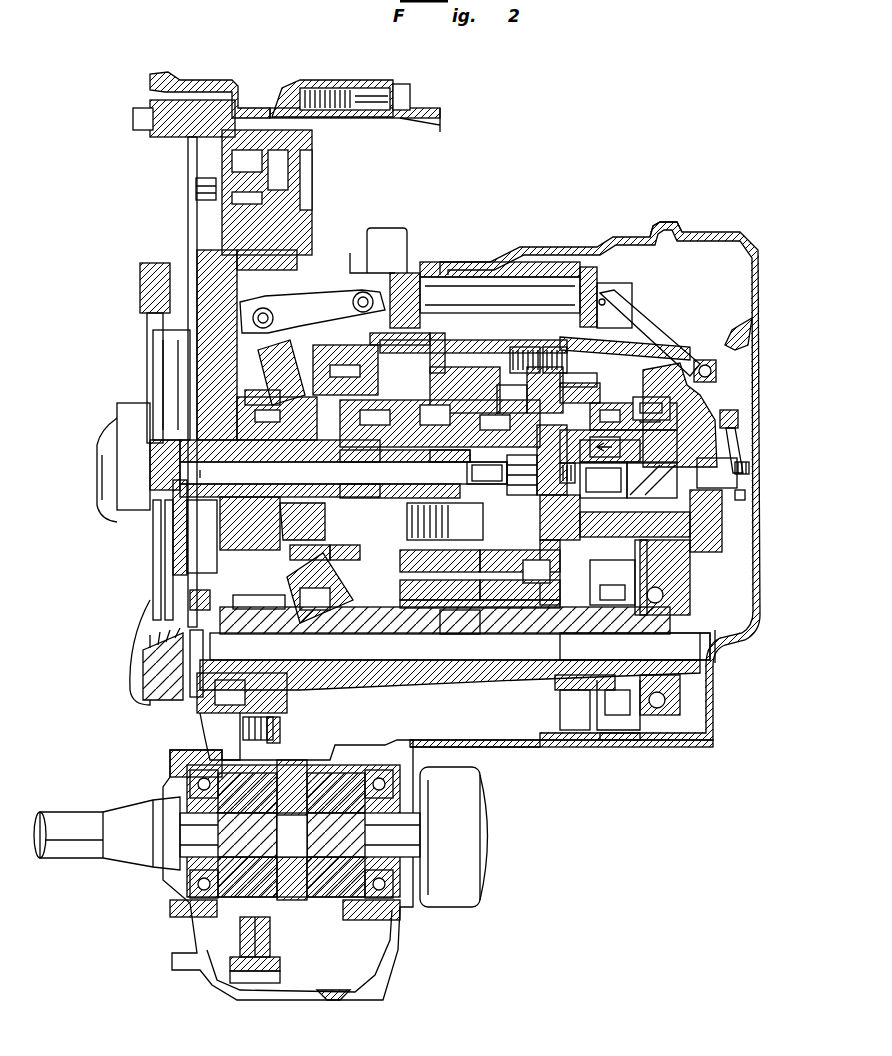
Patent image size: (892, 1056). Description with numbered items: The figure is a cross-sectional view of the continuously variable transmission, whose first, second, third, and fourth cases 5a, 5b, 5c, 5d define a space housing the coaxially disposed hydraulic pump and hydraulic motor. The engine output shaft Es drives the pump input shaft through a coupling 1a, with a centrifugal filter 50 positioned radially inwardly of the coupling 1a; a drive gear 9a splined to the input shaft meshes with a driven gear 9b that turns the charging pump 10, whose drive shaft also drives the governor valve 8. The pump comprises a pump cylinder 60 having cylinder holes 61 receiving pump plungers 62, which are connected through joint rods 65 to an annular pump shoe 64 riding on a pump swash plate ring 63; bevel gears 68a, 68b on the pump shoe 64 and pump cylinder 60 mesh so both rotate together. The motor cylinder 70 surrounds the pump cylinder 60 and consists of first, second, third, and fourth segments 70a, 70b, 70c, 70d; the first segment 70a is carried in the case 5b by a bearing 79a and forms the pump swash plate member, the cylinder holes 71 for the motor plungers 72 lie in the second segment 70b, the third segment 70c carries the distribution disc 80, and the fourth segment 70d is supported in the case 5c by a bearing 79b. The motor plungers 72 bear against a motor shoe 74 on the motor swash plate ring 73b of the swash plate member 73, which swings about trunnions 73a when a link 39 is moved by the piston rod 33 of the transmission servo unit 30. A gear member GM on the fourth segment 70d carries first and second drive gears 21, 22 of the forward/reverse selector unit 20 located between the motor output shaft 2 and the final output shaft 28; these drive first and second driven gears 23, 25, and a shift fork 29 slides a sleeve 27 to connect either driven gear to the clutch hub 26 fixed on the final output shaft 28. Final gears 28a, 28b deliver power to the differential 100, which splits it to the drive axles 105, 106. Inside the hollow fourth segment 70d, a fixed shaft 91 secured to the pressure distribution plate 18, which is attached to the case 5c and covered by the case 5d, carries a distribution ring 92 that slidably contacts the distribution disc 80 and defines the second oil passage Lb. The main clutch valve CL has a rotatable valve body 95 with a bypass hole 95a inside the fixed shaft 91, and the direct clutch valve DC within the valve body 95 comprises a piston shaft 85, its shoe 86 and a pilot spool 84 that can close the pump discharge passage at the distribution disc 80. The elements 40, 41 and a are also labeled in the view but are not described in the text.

The coupling 1a is at (140, 285).
The output shaft 2 is at (676, 420).
The first case 5a is at (188, 160).
The second case 5b is at (288, 84).
The third case 5c is at (560, 246).
The fourth case 5d is at (732, 238).
The governor valve 8 is at (375, 228).
The drive gear 9a is at (160, 568).
The driven gear 9b is at (205, 178).
The charging pump 10 is at (222, 224).
The pressure distribution plate 18 is at (722, 530).
The forward/reverse selector unit 20 is at (618, 748).
The first drive gear 21 is at (578, 369).
The second drive gear 22 is at (640, 397).
The first driven gear 23 is at (560, 722).
The second driven gear 25 is at (632, 735).
The clutch hub 26 is at (612, 628).
The sleeve 27 is at (618, 705).
The final output shaft 28 is at (520, 676).
The final gear 28a is at (245, 606).
The final gear 28b is at (255, 983).
The shift fork 29 is at (590, 735).
The transmission servo unit 30 is at (500, 277).
The piston rod 33 is at (412, 273).
The link 39 is at (318, 305).
The control unit 40 is at (731, 312).
The control lever 41 is at (672, 302).
The centrifugal filter 50 is at (146, 361).
The pump cylinder 60 is at (487, 473).
The cylinder holes 61 is at (445, 521).
The pump plungers 62 is at (450, 466).
The pump swash plate ring 63 is at (405, 466).
The pump shoe 64 is at (390, 595).
The joint rods 65 is at (400, 480).
The bevel gear 68a is at (378, 605).
The bevel gear 68b is at (425, 605).
The motor cylinder 70 is at (448, 660).
The first cylinder segment 70a is at (338, 385).
The second cylinder segment 70b is at (400, 348).
The third cylinder segment 70c is at (520, 347).
The fourth cylinder segment 70d is at (556, 347).
The cylinder holes 71 is at (462, 635).
The motor plungers 72 is at (493, 615).
The swash plate member 73 is at (320, 588).
The trunnions 73a is at (343, 473).
The motor swash plate ring 73b is at (290, 560).
The motor shoe 74 is at (350, 622).
The bearing 79a is at (330, 550).
The bearing 79b is at (683, 545).
The distribution disc 80 is at (496, 390).
The pilot spool 84 is at (715, 490).
The piston shaft 85 is at (750, 468).
The shoe 86 is at (530, 615).
The fixed shaft 91 is at (603, 488).
The distribution ring 92 is at (612, 582).
The main clutch valve body 95 is at (652, 488).
The bypass hole 95a is at (686, 540).
The differential 100 is at (325, 930).
The drive axle 105 is at (72, 848).
The drive axle 106 is at (460, 907).
The spring a is at (567, 485).
The main clutch valve CL is at (724, 431).
The direct clutch valve DC is at (748, 499).
The engine output shaft Es is at (100, 430).
The gear member GM is at (602, 392).
The second oil passage Lb is at (460, 646).